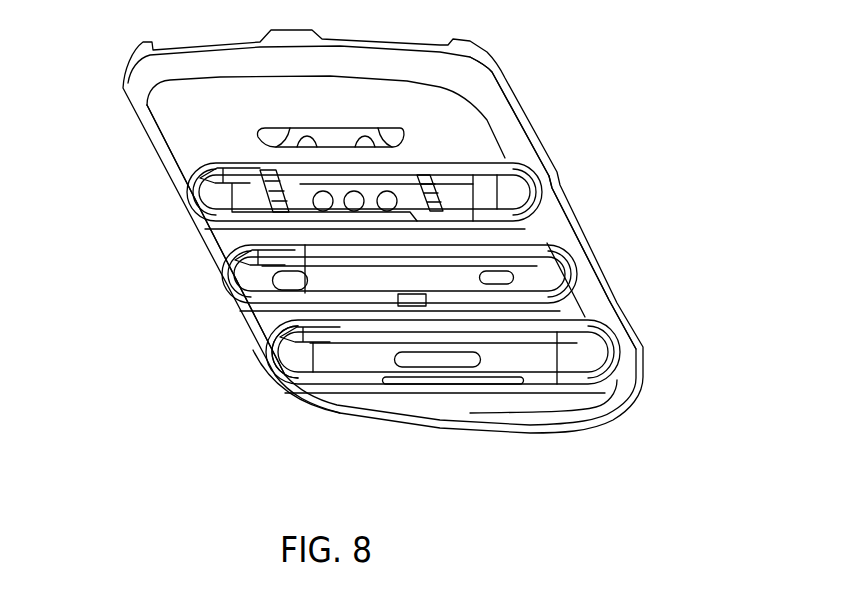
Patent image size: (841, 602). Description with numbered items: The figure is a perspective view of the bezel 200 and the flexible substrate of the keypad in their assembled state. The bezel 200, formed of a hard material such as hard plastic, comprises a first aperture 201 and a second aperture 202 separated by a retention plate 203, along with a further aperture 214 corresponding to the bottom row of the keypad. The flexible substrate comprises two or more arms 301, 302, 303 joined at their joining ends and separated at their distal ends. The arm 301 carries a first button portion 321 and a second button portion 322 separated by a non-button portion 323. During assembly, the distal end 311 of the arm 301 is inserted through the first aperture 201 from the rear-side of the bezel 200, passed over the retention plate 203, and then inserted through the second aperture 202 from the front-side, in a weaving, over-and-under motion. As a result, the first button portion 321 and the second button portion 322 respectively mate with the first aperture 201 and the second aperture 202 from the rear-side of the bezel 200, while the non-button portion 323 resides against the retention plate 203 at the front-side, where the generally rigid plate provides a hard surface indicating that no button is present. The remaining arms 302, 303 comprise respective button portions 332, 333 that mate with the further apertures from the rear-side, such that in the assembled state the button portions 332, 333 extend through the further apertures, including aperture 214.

The bezel 200 is at (138, 94).
The first aperture 201 is at (206, 255).
The second aperture 202 is at (583, 284).
The retention plate 203 is at (518, 150).
The further aperture 214 is at (284, 378).
The arm 301 is at (247, 280).
The arm 302 is at (497, 197).
The arm 303 is at (577, 355).
The distal end 311 is at (540, 278).
The first button portion 321 is at (257, 335).
The second button portion 322 is at (503, 277).
The non-button portion 323 is at (373, 285).
The button portion 332 is at (383, 180).
The button portion 333 is at (460, 362).